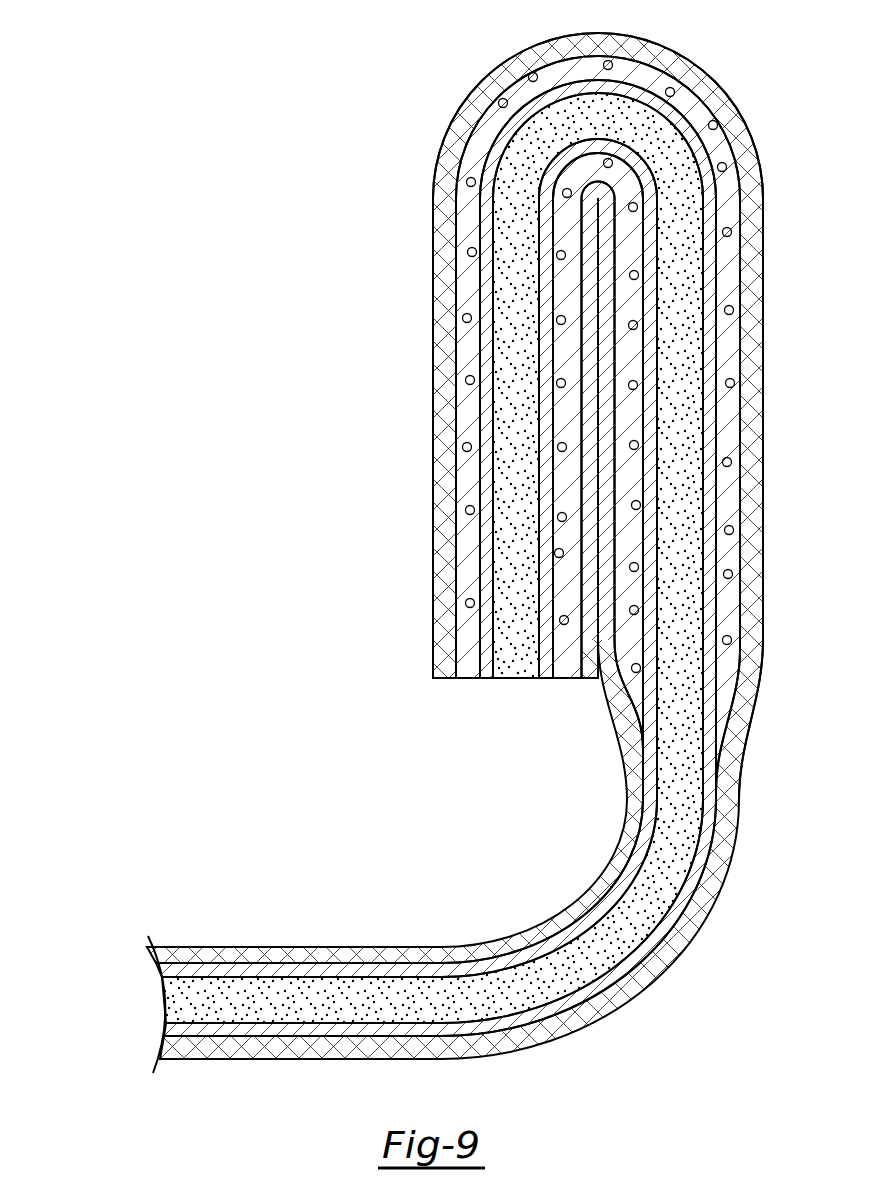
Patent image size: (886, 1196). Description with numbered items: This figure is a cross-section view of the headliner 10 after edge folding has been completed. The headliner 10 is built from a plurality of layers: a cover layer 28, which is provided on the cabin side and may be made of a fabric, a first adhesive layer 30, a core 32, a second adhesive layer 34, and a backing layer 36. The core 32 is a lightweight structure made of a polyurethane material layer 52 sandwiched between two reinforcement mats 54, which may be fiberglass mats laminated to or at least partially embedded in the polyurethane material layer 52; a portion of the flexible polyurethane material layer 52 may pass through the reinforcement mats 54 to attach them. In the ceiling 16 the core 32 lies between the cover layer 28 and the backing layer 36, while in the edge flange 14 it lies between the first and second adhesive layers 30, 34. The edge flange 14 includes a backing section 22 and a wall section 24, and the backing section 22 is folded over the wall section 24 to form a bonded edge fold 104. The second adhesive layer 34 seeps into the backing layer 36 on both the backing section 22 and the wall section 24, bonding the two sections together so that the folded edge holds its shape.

The headliner 10 is at (205, 173).
The folded bend portion 104 is at (445, 70).
The edge flange 14 is at (767, 420).
The ceiling 16 is at (244, 947).
The backing section 22 is at (432, 440).
The wall section 24 is at (767, 493).
The cover layer 28 is at (437, 681).
The first adhesive layer 30 is at (470, 681).
The core 32 is at (365, 559).
The second adhesive layer 34 is at (563, 681).
The backing layer 36 is at (590, 681).
The polyurethane material layer 52 is at (167, 1001).
The reinforcement mats 54 is at (140, 965).